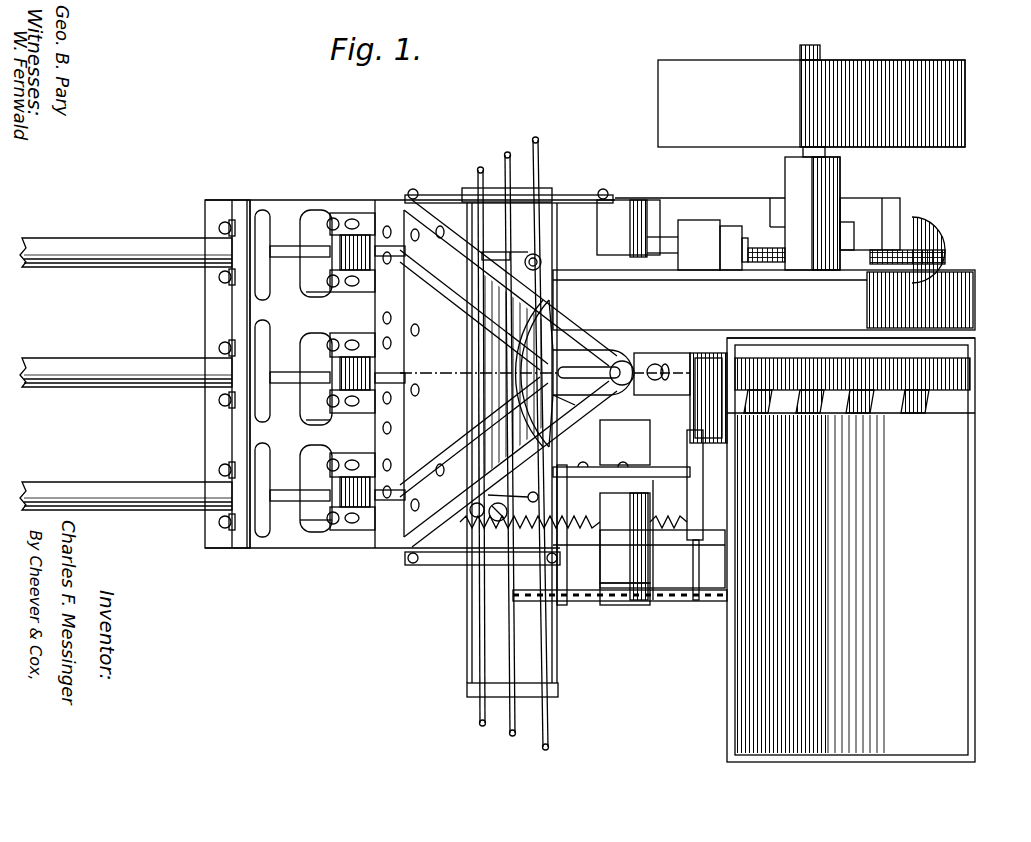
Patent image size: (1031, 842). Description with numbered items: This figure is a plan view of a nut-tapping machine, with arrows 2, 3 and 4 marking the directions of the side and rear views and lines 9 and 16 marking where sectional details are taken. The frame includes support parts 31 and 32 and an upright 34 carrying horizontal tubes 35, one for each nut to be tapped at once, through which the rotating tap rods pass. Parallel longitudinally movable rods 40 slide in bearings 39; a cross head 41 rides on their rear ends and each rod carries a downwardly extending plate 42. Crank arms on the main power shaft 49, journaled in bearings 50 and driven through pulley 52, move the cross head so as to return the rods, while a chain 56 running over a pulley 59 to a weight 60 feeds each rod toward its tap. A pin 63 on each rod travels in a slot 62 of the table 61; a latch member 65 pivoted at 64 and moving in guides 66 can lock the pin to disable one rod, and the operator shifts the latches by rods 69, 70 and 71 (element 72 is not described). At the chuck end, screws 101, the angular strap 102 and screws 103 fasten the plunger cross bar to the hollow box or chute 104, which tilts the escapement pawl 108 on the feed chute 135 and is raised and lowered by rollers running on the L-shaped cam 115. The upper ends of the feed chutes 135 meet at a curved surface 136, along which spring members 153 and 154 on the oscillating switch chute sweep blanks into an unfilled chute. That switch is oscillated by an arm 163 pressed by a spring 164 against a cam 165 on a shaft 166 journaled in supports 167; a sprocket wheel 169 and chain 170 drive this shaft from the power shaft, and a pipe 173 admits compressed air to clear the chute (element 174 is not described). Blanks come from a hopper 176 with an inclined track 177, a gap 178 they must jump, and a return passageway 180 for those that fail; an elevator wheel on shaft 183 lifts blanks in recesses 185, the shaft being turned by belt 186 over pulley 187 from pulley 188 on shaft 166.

The arrow 2 is at (258, 140).
The arrow 3 is at (277, 568).
The arrow 4 is at (1027, 356).
The section line 9 is at (978, 410).
The section line 16 is at (440, 375).
The support part 31 is at (735, 210).
The frame portion 32 is at (284, 205).
The upright 34 is at (246, 305).
The horizontal tube 35 is at (106, 262).
The bearing 39 is at (436, 198).
The longitudinally movable rod 40 is at (662, 236).
The cross head 41 is at (698, 235).
The downwardly extending plate 42 is at (735, 230).
The main power shaft 49 is at (820, 52).
The bearing 50 is at (835, 180).
The pulley 52 is at (958, 110).
The chain 56 is at (760, 250).
The pulley 59 is at (945, 258).
The weight 60 is at (930, 228).
The table 61 is at (557, 655).
The slot 62 is at (496, 250).
The pin 63 is at (528, 495).
The pivot point 64 is at (489, 510).
The latch member 65 is at (530, 255).
The guides 66 is at (560, 415).
The rod 69 is at (478, 168).
The rod 70 is at (506, 153).
The rod 71 is at (538, 140).
The arm 72 is at (330, 500).
The screws 101 is at (330, 279).
The angular strap 102 is at (362, 222).
The screws 103 is at (350, 222).
The hollow box or chute 104 is at (352, 256).
The escapement pawl 108 is at (390, 230).
The cam 115 is at (305, 248).
The feed chute 135 is at (418, 270).
The curved surface 136 is at (580, 352).
The spring member 153 is at (600, 368).
The spring member 154 is at (580, 398).
The arm 163 is at (705, 520).
The spring 164 is at (568, 548).
The cam 165 is at (630, 460).
The shaft 166 is at (620, 255).
The supports 167 is at (640, 200).
The sprocket wheel 169 is at (618, 605).
The chain 170 is at (700, 601).
The pipe 173 is at (648, 370).
The ball 174 is at (660, 366).
The hopper 176 is at (738, 722).
The inclined track 177 is at (778, 356).
The gap 178 is at (708, 352).
The return passageway 180 is at (735, 408).
The shaft 183 is at (850, 238).
The recesses 185 is at (870, 405).
The belt 186 is at (973, 308).
The pulley 187 is at (975, 280).
The pulley 188 is at (583, 276).